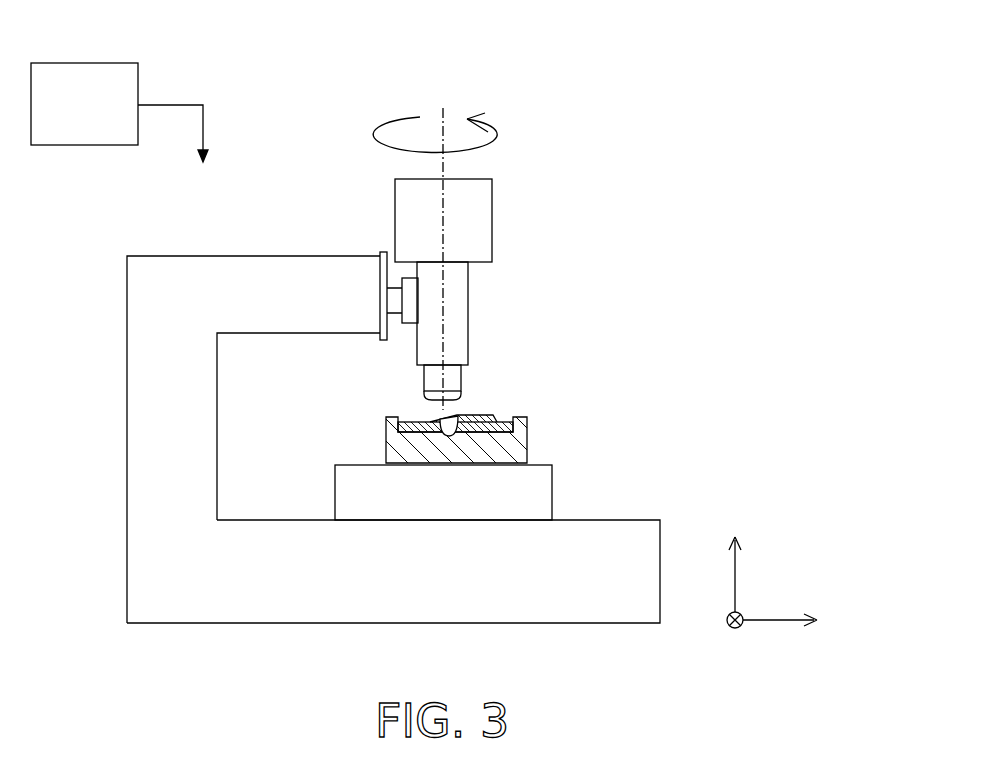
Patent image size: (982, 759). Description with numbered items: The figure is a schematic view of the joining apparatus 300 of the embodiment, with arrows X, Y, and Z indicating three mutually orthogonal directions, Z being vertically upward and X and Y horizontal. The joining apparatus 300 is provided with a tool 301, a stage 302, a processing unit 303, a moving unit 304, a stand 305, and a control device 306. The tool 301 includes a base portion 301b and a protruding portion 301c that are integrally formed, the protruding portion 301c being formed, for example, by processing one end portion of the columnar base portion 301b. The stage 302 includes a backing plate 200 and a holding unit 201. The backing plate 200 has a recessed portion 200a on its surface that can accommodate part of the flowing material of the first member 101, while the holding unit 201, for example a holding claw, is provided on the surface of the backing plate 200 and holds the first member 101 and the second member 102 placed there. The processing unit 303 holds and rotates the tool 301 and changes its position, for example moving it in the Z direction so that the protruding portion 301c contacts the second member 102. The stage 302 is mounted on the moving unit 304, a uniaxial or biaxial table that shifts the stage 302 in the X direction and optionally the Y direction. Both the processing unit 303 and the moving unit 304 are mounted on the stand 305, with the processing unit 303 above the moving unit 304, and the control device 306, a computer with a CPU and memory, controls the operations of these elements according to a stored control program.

The joining apparatus 300 is at (643, 125).
The tool 301 is at (610, 302).
The base portion 301b is at (460, 380).
The protruding portion 301c is at (460, 398).
The stage 302 is at (645, 398).
The processing unit 303 is at (500, 290).
The moving unit 304 is at (537, 498).
The stand 305 is at (608, 590).
The control device 306 is at (100, 63).
The first member 101 is at (497, 415).
The second member 102 is at (440, 424).
The backing plate 200 is at (507, 450).
The recessed portion 200a is at (446, 440).
The holding unit 201 is at (527, 428).